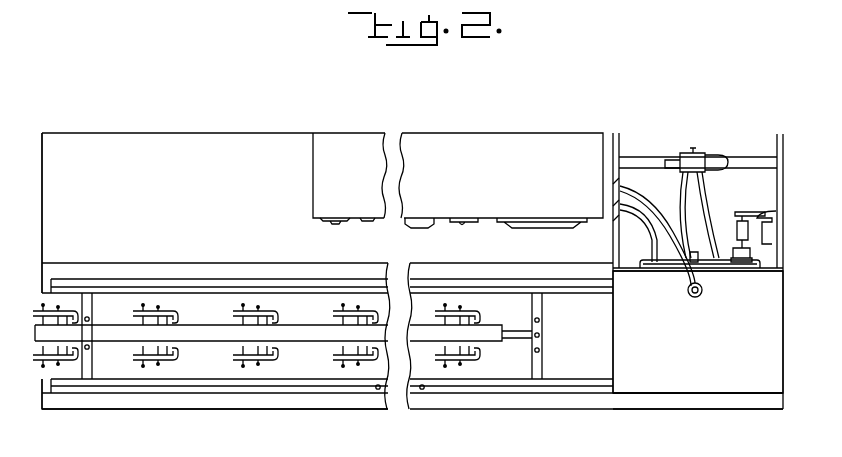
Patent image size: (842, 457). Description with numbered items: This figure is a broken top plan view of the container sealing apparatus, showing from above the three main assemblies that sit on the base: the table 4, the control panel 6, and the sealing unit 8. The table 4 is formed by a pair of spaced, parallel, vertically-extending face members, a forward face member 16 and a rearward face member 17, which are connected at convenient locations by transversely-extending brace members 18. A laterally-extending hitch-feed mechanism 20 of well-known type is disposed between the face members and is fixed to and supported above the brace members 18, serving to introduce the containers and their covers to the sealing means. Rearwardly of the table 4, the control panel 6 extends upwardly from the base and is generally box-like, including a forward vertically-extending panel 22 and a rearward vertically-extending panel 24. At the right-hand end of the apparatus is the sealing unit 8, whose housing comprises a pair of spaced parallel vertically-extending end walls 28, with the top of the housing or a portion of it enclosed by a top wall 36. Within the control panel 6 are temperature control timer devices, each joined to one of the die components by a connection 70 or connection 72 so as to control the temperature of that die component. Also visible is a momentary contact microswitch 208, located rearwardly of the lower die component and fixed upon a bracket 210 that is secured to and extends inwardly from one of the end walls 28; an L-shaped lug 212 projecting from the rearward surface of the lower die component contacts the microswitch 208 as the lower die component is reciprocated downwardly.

The table 4 is at (58, 414).
The control panel 6 is at (282, 126).
The sealing unit 8 is at (735, 422).
The forward face member 16 is at (153, 408).
The rearward face member 17 is at (158, 265).
The brace member 18 is at (94, 372).
The hitch-feed mechanism 20 is at (32, 286).
The forward vertically-extending panel 22 is at (318, 219).
The rearward vertically-extending panel 24 is at (342, 133).
The end wall 28 is at (612, 238).
The top wall 36 is at (703, 339).
The connection 70 is at (626, 198).
The connection 72 is at (636, 216).
The momentary contact microswitch 208 is at (738, 213).
The bracket 210 is at (777, 211).
The L-shaped lug 212 is at (750, 259).